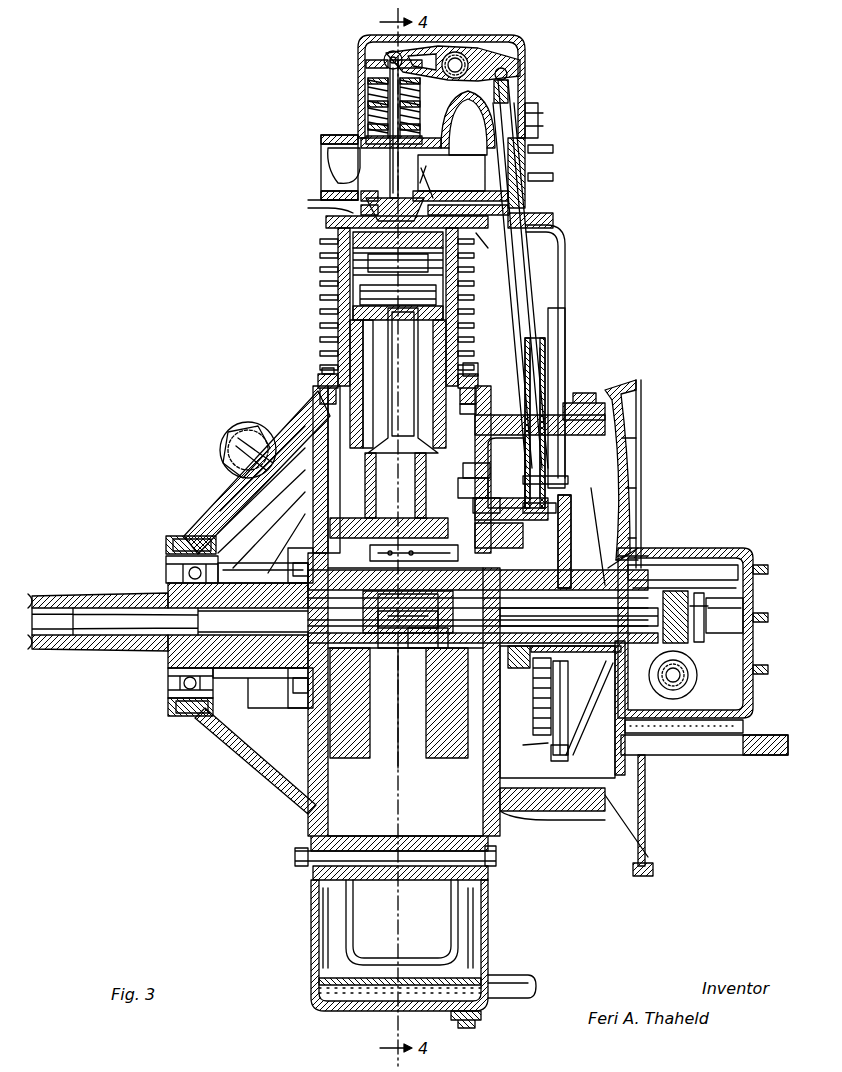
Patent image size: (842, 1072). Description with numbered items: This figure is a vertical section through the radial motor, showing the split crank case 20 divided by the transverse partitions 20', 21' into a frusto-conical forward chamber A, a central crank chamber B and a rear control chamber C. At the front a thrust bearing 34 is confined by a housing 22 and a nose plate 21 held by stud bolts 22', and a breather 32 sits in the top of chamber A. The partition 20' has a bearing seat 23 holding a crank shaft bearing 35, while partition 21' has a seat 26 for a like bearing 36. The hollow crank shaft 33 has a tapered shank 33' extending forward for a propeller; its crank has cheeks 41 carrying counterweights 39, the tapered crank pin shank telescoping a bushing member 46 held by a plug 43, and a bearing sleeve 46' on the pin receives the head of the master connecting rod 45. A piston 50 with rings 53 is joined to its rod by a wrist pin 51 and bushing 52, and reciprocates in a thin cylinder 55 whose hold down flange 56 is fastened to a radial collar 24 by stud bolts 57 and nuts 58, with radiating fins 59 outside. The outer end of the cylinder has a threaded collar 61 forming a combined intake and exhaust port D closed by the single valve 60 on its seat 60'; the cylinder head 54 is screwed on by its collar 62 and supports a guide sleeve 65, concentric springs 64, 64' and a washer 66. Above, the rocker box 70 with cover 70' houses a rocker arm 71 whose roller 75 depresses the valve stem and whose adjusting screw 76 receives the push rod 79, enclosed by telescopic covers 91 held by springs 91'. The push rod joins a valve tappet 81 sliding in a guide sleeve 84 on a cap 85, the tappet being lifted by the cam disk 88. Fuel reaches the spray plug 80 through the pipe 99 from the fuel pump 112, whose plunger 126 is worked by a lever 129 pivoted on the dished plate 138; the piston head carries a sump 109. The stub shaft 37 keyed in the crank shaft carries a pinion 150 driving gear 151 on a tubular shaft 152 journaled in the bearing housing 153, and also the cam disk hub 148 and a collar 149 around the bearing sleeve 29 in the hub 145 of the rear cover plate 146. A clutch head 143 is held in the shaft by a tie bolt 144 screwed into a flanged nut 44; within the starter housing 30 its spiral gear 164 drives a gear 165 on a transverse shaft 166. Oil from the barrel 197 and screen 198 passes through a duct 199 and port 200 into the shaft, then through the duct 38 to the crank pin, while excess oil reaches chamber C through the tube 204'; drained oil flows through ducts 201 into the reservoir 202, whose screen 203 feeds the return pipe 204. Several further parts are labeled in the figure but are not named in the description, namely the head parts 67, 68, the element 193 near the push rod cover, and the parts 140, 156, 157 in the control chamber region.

The split crank case 20 is at (254, 479).
The transverse vertical partition 20' is at (255, 761).
The nose plate 21 is at (173, 531).
The transverse vertical partition 21' is at (404, 702).
The housing 22 is at (174, 566).
The stud bolts 22' is at (170, 714).
The annular bearing seat 23 is at (300, 695).
The radial collars 24 is at (310, 380).
The bearing seat 26 is at (530, 690).
The bearing sleeve 29 is at (682, 585).
The starter housing 30 is at (735, 540).
The breather 32 is at (212, 436).
The hollow crank shaft 33 is at (437, 636).
The tapered shank 33' is at (168, 627).
The thrust bearing 34 is at (160, 672).
The crank shaft bearing 35 is at (282, 556).
The bearing 36 is at (440, 665).
The stub shaft 37 is at (655, 556).
The duct 38 is at (408, 627).
The counterweights 39 is at (352, 752).
The cheeks 41 is at (345, 665).
The plug 43 is at (300, 522).
The flanged nut 44 is at (428, 637).
The master connecting rod 45 is at (412, 402).
The bushing member 46 is at (389, 513).
The bearing sleeve 46' is at (468, 486).
The piston 50 is at (418, 368).
The wrist pin 51 is at (352, 275).
The bushing 52 is at (440, 302).
The rings 53 is at (345, 240).
The cylinder head 54 is at (356, 60).
The cylinder 55 is at (342, 340).
The hold down flange 56 is at (310, 375).
The stud bolts 57 is at (470, 392).
The nuts 58 is at (460, 355).
The radiating fins 59 is at (312, 298).
The valve 60 is at (325, 165).
The valve seat 60' is at (434, 204).
The externally threaded collar 61 is at (420, 175).
The internally screw-threaded collar 62 is at (318, 190).
The valve spring 64 is at (350, 108).
The valve spring 64' is at (425, 108).
The guide sleeve 65 is at (358, 110).
The washer 66 is at (380, 56).
The head chamber 67 is at (322, 152).
The combustion chamber 68 is at (460, 120).
The rocker box 70 is at (528, 84).
The cover 70' is at (463, 80).
The rocker arm 71 is at (430, 38).
The roller 75 is at (378, 40).
The adjusting screw 76 is at (460, 52).
The push rod 79 is at (505, 105).
The fuel spray plug 80 is at (522, 215).
The valve tappet 81 is at (520, 458).
The guide sleeve 84 is at (622, 435).
The cap 85 is at (590, 394).
The cam disk 88 is at (560, 690).
The telescopic tubular covers 91 is at (551, 174).
The springs 91' is at (559, 120).
The fuel pipe 99 is at (572, 232).
The sump 109 is at (318, 218).
The fuel pump 112 is at (540, 368).
The fuel plunger 126 is at (558, 392).
The actuating lever 129 is at (568, 466).
The dished plate 138 is at (561, 499).
The cam shaft bearing 140 is at (507, 538).
The clutch head 143 is at (735, 600).
The tie bolt 144 is at (523, 666).
The hub 145 is at (638, 544).
The rear cover plate 146 is at (622, 490).
The hub 148 is at (564, 696).
The collar 149 is at (589, 708).
The pinion 150 is at (579, 621).
The gear 151 is at (472, 467).
The tubular shaft 152 is at (511, 523).
The bearing housing 153 is at (427, 554).
The clutch spring 156 is at (526, 748).
The housing rib 157 is at (648, 531).
The spiral gear 164 is at (686, 655).
The gear 165 is at (680, 665).
The transverse shaft 166 is at (672, 675).
The tube clamp 193 is at (562, 134).
The oil barrel 197 is at (700, 750).
The cylindrical screen 198 is at (670, 750).
The duct 199 is at (575, 755).
The port 200 is at (709, 613).
The ducts 201 is at (285, 880).
The reservoir 202 is at (470, 938).
The cylindrical screen 203 is at (395, 1000).
The return pipe 204 is at (523, 996).
The tube 204' is at (685, 815).
The forward chamber A is at (225, 742).
The middle chamber B is at (300, 808).
The rear chamber C is at (545, 775).
The intake and exhaust port D is at (442, 160).